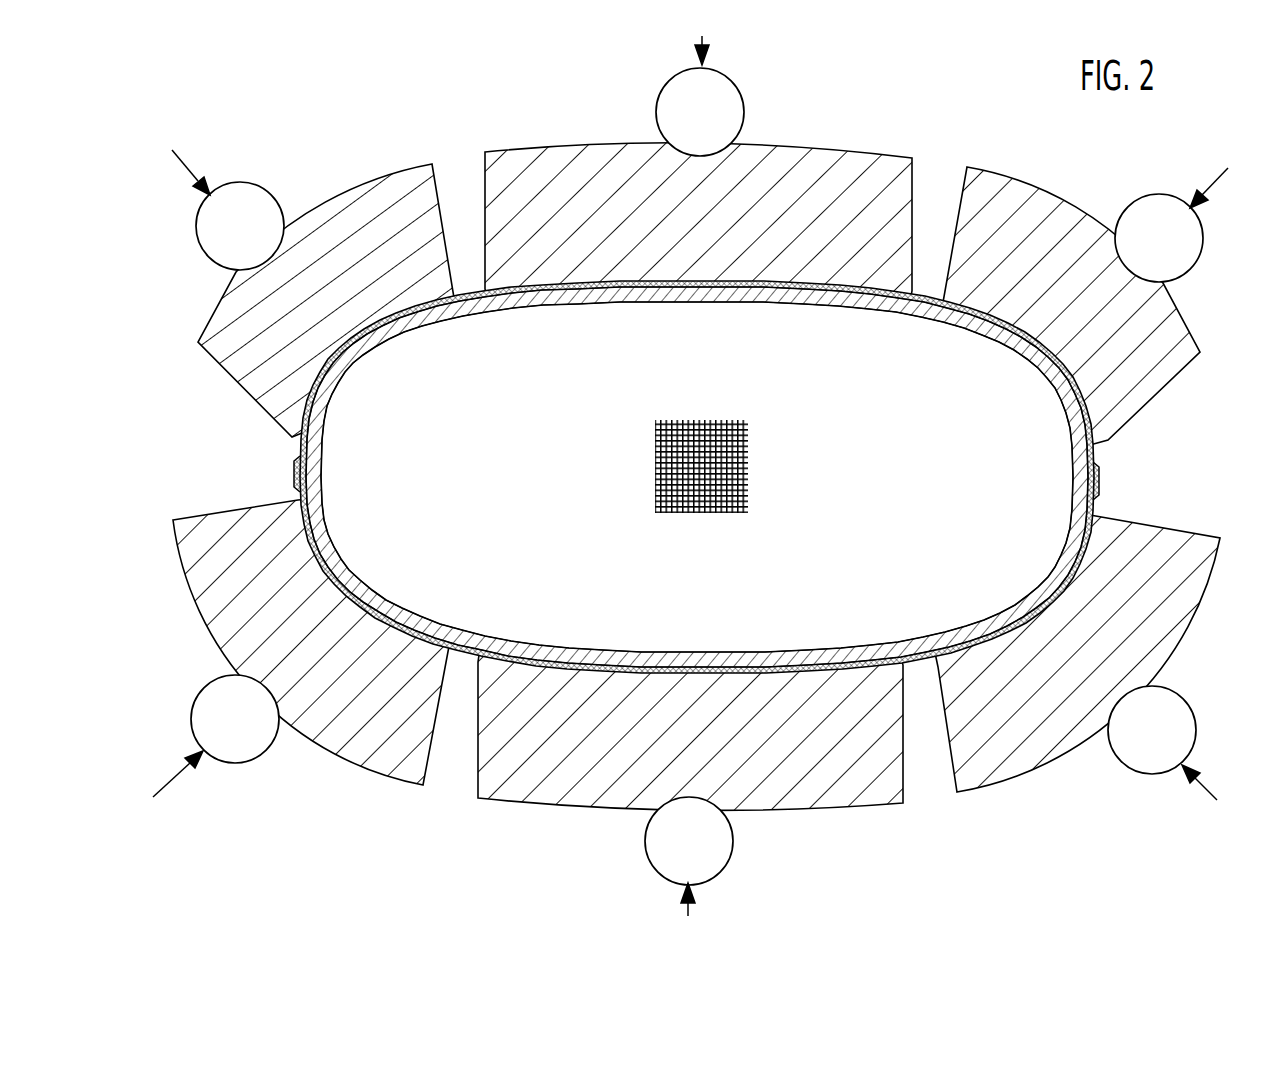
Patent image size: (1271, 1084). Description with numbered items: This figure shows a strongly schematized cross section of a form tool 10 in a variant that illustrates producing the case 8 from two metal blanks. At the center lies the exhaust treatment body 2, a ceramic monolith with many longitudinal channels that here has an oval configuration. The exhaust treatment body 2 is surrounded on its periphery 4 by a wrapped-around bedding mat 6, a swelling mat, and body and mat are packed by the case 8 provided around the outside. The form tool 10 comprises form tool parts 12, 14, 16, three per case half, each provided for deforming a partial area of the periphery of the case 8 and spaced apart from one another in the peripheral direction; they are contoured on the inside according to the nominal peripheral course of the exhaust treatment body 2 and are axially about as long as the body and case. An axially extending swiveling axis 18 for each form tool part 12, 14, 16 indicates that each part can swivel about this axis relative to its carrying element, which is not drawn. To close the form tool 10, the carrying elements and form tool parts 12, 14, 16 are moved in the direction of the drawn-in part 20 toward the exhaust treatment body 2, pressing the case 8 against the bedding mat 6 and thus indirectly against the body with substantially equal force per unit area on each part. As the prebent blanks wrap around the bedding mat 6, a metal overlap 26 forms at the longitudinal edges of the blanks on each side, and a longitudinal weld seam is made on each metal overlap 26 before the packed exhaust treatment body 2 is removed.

The exhaust treatment body 2 is at (704, 391).
The periphery 4 is at (884, 310).
The bedding mat 6 is at (982, 330).
The case 8 is at (928, 298).
The form tool 10 is at (696, 467).
The form tool part 12 is at (336, 225).
The form tool part 14 is at (859, 178).
The form tool part 16 is at (1064, 226).
The swiveling axis 18 is at (725, 115).
The drawn-in part 20 is at (705, 50).
The metal overlap 26 is at (281, 475).